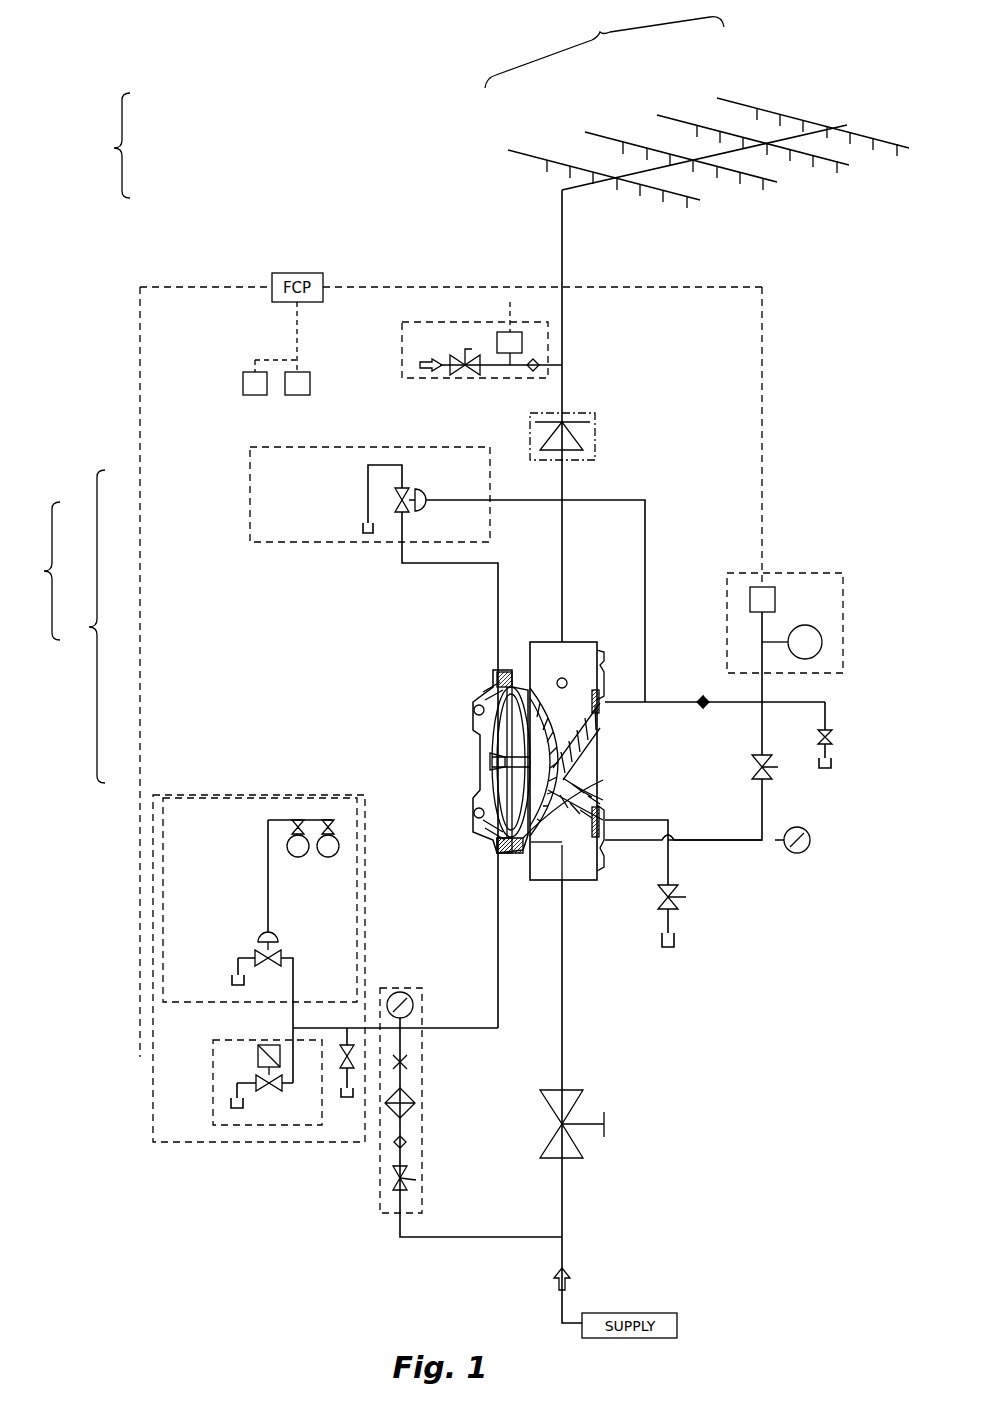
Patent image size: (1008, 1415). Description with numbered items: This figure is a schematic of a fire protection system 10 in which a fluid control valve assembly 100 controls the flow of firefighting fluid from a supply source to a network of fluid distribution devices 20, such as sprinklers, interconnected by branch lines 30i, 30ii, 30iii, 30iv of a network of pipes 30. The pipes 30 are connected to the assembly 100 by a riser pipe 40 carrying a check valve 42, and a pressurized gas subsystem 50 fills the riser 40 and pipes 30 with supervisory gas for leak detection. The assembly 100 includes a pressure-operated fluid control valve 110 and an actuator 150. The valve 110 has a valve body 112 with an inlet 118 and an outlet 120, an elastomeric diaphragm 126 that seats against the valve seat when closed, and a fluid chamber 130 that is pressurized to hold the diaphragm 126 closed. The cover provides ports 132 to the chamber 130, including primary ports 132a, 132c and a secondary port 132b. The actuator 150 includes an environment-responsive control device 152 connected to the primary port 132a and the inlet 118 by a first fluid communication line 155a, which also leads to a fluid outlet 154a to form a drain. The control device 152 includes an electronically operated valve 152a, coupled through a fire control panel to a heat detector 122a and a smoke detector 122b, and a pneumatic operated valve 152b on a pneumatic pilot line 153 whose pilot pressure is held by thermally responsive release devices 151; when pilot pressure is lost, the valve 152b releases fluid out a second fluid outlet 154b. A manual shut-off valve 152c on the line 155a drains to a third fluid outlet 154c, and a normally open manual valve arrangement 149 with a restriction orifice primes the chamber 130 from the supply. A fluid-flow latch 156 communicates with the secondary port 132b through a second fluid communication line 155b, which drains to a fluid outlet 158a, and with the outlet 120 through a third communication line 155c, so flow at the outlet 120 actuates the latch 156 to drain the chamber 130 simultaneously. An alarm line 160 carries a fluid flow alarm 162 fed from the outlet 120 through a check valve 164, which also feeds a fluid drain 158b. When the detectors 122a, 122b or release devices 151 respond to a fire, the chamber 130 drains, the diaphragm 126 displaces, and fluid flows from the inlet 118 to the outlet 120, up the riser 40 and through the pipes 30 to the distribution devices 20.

The fire protection system 10 is at (110, 145).
The fluid distribution devices 20 is at (372, 114).
The network of pipes 30 is at (666, 101).
The branch lines 30i is at (508, 150).
The second irrigation line 30ii is at (585, 132).
The third irrigation line 30iii is at (657, 115).
The fourth irrigation line 30iv is at (717, 98).
The riser pipe 40 is at (562, 228).
The check valve 42 is at (595, 420).
The pressurized gas subsystem 50 is at (449, 321).
The fluid control valve assembly 100 is at (277, 226).
The pressure-operated fluid control valve 110 is at (471, 713).
The valve body 112 is at (603, 763).
The inlet 118 is at (571, 866).
The outlet 120 is at (578, 655).
The heat detector 122a is at (243, 384).
The smoke detector 122b is at (297, 395).
The elastomeric diaphragm 126 is at (524, 855).
The fluid chamber 130 is at (478, 790).
The ports 132 is at (486, 747).
The primary port 132a is at (500, 841).
The secondary port 132b is at (500, 667).
The primary port 132c is at (490, 763).
The manual valve arrangement 149 is at (380, 1208).
The actuator 150 is at (79, 626).
The thermally responsive release devices 151 is at (301, 858).
The environment-responsive control device 152 is at (204, 795).
The electronically operated valve 152a is at (258, 1057).
The pneumatic operated valve 152b is at (258, 941).
The manual shut-off valve 152c is at (340, 1050).
The pneumatic pilot line 153 is at (268, 843).
The fluid outlet 154a is at (232, 1103).
The second fluid outlet 154b is at (233, 966).
The third fluid outlet 154c is at (347, 1100).
The first fluid communication line 155a is at (460, 1025).
The second fluid communication line 155b is at (437, 563).
The third communication line 155c is at (645, 542).
The fluid-flow latch 156 is at (410, 494).
The fluid outlet 158a is at (368, 493).
The fluid drain 158b is at (830, 722).
The alarm line 160 is at (764, 627).
The fluid flow alarm 162 is at (822, 645).
The check valve 164 is at (703, 710).